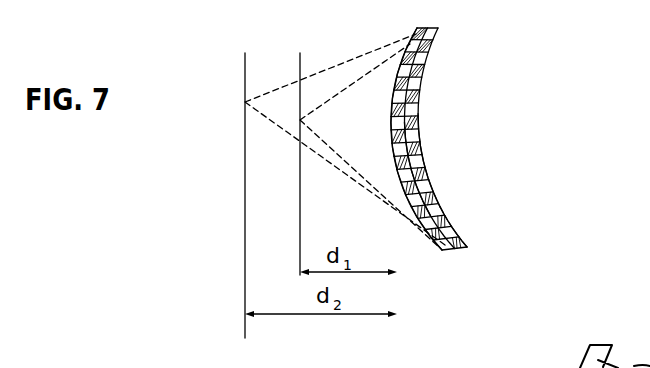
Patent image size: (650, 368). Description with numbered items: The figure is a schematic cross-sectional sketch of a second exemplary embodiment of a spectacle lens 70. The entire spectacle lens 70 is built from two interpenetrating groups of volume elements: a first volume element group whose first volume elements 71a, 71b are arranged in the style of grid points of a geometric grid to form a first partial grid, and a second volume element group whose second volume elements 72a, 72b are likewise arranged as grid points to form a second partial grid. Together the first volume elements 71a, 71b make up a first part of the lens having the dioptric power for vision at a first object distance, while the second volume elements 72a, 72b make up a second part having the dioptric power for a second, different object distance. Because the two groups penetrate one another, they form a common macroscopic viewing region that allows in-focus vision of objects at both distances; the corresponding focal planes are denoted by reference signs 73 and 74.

The spectacle lens 70 is at (455, 257).
The first volume element 71a is at (414, 212).
The first volume element 71b is at (403, 185).
The second volume element 72a is at (440, 203).
The second volume element 72b is at (452, 226).
The focal plane 73 is at (300, 227).
The focal plane 74 is at (245, 282).